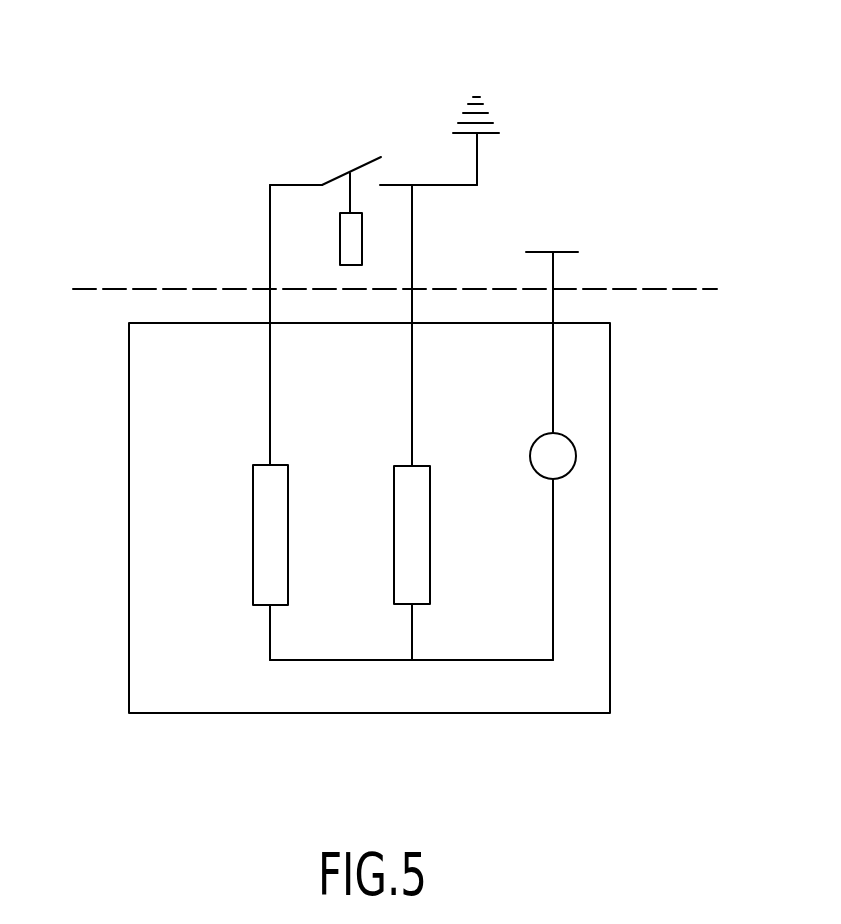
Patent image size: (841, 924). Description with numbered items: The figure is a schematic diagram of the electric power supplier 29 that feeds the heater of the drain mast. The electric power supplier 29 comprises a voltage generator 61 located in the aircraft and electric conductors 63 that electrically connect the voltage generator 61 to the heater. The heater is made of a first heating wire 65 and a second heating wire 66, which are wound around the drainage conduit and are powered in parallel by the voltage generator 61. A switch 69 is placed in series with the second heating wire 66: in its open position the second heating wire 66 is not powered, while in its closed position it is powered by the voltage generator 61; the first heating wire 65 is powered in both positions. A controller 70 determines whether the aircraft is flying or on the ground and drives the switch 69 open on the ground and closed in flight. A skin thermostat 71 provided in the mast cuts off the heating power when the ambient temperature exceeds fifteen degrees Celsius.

The electric power supplier 29 is at (663, 203).
The voltage generator 61 is at (567, 252).
The electric conductors 63 is at (553, 272).
The first heating wire 65 is at (430, 578).
The second heating wire 66 is at (288, 585).
The switch 69 is at (372, 160).
The controller 70 is at (362, 228).
The skin thermostat 71 is at (575, 444).